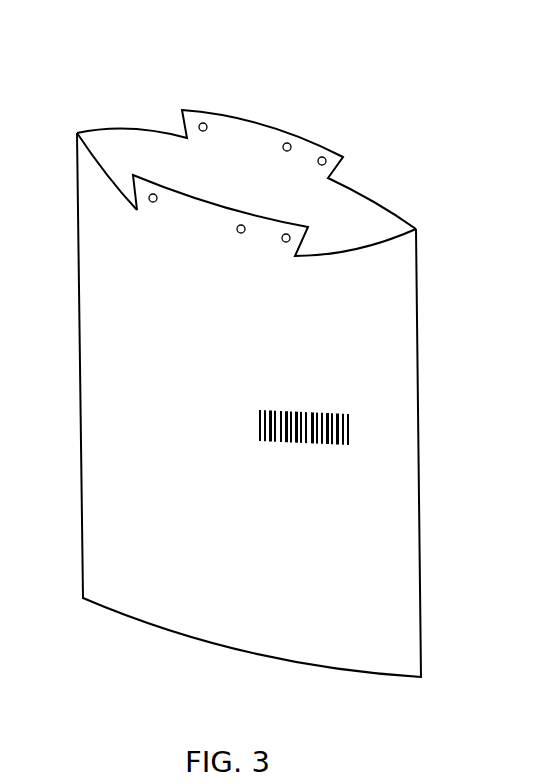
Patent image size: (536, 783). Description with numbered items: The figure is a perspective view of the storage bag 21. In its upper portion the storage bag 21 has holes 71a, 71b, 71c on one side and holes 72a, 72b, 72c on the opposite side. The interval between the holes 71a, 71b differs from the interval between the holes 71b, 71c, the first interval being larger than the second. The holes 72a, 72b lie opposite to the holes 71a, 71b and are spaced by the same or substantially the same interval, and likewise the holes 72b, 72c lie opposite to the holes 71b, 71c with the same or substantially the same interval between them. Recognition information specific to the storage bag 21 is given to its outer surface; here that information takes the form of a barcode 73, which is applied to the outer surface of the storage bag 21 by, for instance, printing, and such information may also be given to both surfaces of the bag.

The storage bag 21 is at (352, 46).
The hole 71a is at (149, 201).
The hole 71b is at (237, 232).
The hole 71c is at (282, 241).
The hole 72a is at (203, 123).
The hole 72b is at (287, 143).
The hole 72c is at (323, 157).
The barcode 73 is at (349, 418).